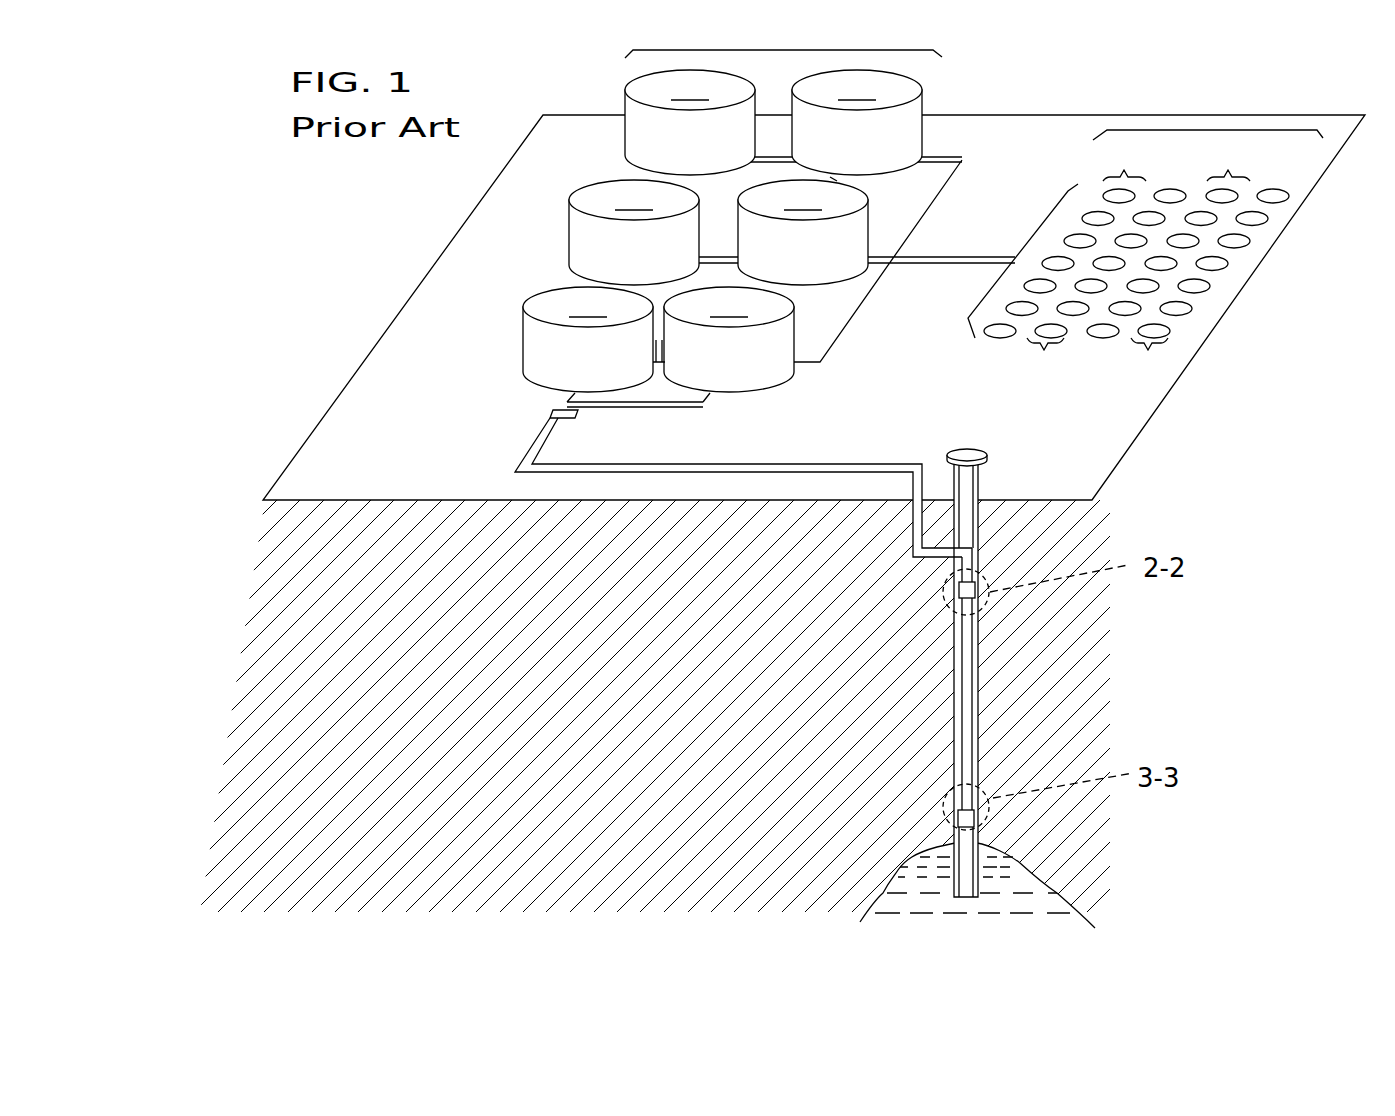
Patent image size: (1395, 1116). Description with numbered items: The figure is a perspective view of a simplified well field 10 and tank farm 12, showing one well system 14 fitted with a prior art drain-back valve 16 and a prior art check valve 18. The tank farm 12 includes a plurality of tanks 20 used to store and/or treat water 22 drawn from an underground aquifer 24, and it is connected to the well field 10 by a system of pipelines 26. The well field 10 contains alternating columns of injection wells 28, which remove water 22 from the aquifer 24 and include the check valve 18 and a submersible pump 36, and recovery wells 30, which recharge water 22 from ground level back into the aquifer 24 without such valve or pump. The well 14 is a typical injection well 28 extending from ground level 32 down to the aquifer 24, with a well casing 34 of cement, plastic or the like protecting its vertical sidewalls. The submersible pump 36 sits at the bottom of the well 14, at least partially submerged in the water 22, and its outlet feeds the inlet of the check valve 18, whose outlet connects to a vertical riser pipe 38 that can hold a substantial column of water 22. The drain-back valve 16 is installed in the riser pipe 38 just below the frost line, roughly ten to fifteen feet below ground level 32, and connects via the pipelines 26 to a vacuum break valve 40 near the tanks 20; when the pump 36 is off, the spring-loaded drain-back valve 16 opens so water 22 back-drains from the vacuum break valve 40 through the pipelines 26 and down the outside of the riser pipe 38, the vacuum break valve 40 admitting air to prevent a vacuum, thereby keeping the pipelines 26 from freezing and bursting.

The well field 10 is at (1145, 228).
The tank farm 12 is at (779, 50).
The well system 14 is at (1005, 477).
The drain-back valve 16 is at (968, 594).
The check valve 18 is at (973, 812).
The tank 20 is at (908, 232).
The water 22 is at (1025, 899).
The aquifer 24 is at (1030, 867).
The pipelines 26 is at (772, 266).
The injection well 28 is at (1176, 160).
The recovery well 30 is at (1095, 360).
The ground level 32 is at (1158, 407).
The well casing 34 is at (980, 535).
The submersible pump 36 is at (968, 878).
The riser pipe 38 is at (968, 677).
The vacuum break valve 40 is at (548, 413).